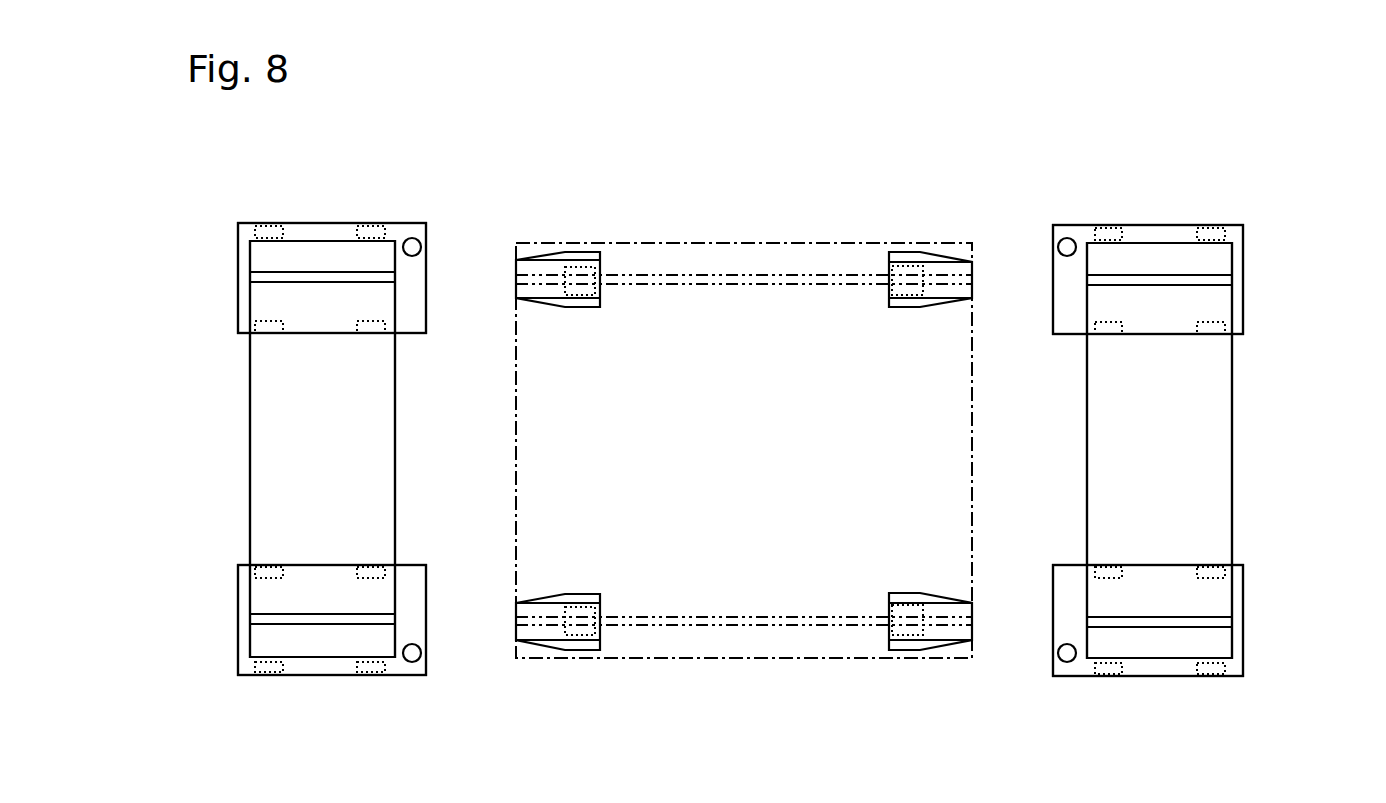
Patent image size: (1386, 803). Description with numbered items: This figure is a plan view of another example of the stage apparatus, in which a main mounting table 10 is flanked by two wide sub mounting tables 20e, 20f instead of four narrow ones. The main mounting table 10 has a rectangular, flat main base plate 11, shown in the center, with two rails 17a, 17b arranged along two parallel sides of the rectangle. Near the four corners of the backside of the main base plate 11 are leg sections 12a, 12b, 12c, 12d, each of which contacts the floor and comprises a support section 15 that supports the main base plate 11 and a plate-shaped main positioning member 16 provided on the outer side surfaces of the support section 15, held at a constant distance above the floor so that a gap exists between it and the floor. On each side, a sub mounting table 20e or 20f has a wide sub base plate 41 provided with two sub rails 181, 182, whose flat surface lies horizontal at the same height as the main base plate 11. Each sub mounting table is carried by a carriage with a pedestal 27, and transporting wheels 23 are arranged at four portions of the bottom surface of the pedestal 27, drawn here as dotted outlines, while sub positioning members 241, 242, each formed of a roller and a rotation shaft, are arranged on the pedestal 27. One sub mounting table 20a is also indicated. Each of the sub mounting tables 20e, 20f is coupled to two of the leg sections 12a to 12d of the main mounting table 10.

The main mounting table 10 is at (784, 394).
The main base plate 11 is at (972, 447).
The leg section 12a is at (608, 577).
The leg section 12b is at (882, 580).
The leg section 12c is at (884, 320).
The leg section 12d is at (604, 320).
The support section 15 is at (596, 268).
The main positioning member 16 is at (582, 308).
The rail 17a is at (718, 285).
The rail 17b is at (718, 617).
The sub rail 181 is at (1270, 620).
The sub rail 182 is at (1270, 276).
The sub mounting table 20a is at (262, 682).
The sub mounting table 20e is at (198, 380).
The sub mounting table 20f is at (1290, 383).
The transporting wheel 23 is at (280, 226).
The sub positioning member 241 is at (1083, 720).
The sub positioning member 242 is at (412, 663).
The pedestal 27 is at (240, 252).
The sub base plate 41 is at (250, 430).